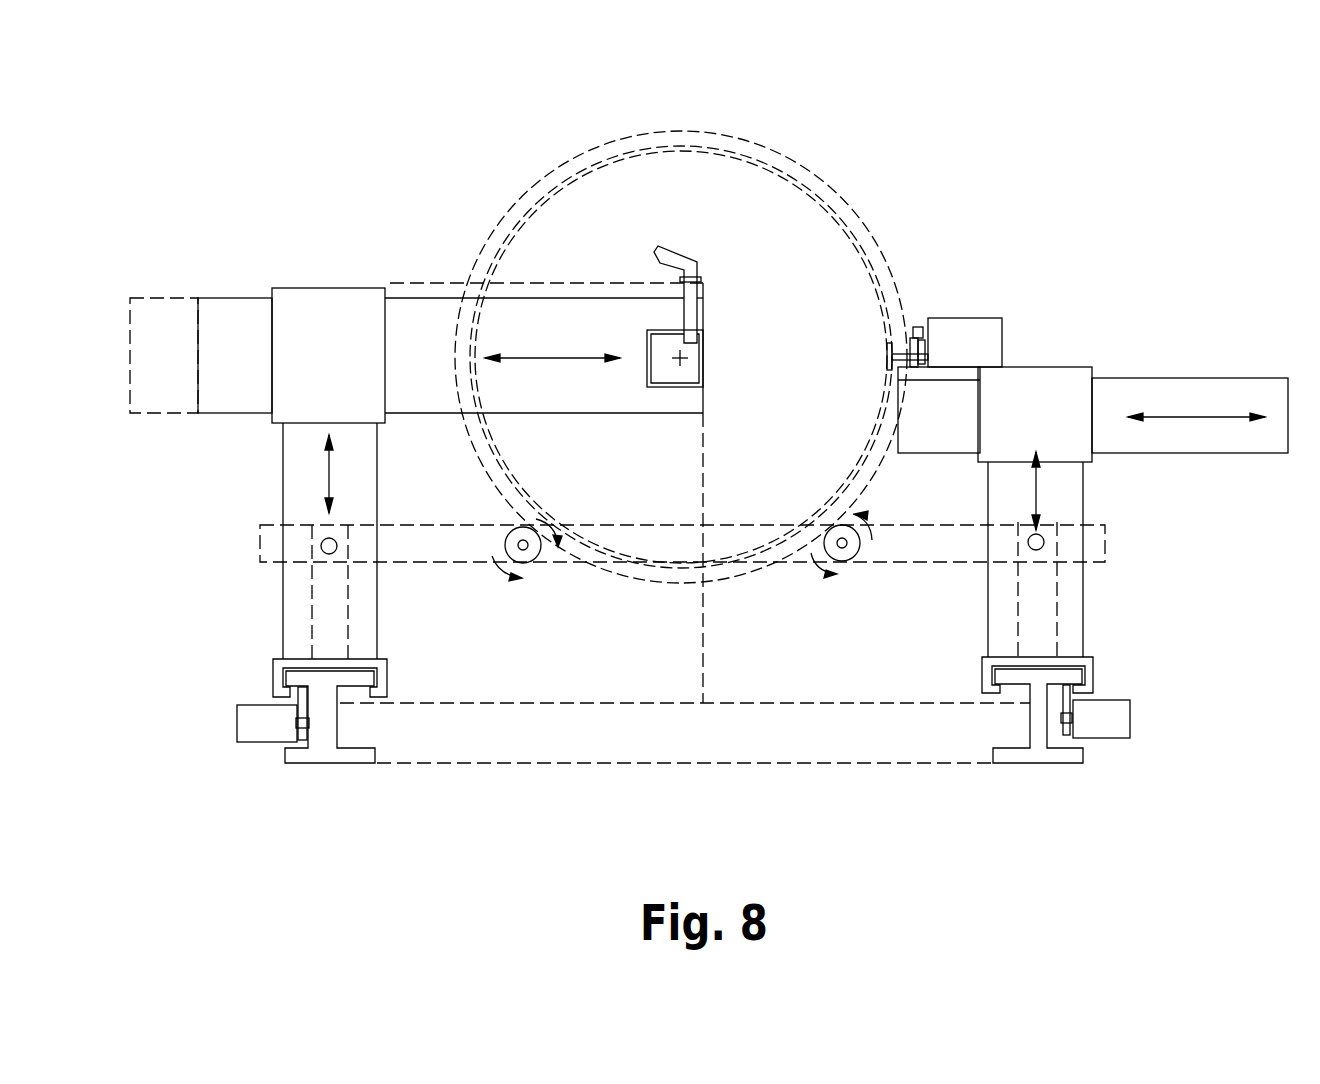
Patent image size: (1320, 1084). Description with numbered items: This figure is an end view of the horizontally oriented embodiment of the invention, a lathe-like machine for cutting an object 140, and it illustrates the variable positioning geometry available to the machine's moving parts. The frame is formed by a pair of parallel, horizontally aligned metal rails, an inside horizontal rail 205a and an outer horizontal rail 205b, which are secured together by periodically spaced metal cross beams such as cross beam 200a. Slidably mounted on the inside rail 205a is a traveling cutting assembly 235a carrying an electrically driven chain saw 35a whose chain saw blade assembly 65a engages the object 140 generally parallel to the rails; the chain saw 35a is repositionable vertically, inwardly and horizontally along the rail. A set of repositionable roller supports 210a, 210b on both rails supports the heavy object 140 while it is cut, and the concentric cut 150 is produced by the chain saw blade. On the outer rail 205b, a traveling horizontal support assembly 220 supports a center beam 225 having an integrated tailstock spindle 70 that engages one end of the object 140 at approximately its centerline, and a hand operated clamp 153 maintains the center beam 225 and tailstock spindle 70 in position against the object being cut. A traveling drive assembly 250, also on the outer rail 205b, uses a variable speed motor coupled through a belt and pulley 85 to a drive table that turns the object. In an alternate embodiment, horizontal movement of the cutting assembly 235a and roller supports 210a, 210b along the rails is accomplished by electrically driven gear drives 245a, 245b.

The object 140 is at (681, 317).
The concentric cut 150 is at (693, 322).
The hand operated clamp 153 is at (723, 197).
The tailstock spindle 70 is at (586, 251).
The center beam 225 is at (824, 424).
The traveling drive assembly 250 is at (510, 280).
The traveling horizontal support assembly 220 is at (257, 305).
The roller support 210b is at (569, 584).
The roller support 210a is at (883, 578).
The outer horizontal rail 205b is at (298, 751).
The inside horizontal rail 205a is at (1072, 756).
The metal cross beam 200a is at (685, 773).
The electrically driven gear drive 245b is at (202, 700).
The electrically driven gear drive 245a is at (1162, 702).
The chain saw 35a is at (1036, 297).
The chain saw blade assembly 65a is at (938, 297).
The pulley 85 is at (943, 315).
The traveling cutting assembly 235a is at (1093, 367).